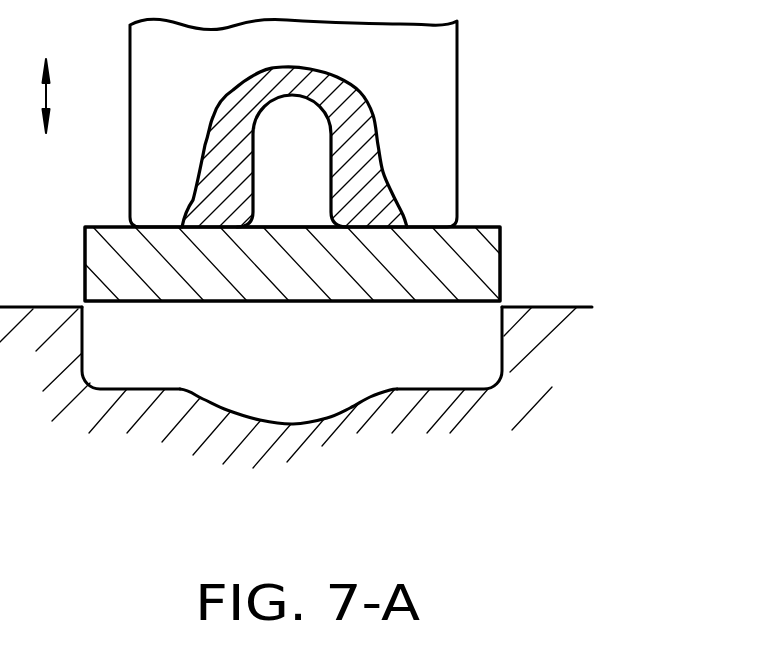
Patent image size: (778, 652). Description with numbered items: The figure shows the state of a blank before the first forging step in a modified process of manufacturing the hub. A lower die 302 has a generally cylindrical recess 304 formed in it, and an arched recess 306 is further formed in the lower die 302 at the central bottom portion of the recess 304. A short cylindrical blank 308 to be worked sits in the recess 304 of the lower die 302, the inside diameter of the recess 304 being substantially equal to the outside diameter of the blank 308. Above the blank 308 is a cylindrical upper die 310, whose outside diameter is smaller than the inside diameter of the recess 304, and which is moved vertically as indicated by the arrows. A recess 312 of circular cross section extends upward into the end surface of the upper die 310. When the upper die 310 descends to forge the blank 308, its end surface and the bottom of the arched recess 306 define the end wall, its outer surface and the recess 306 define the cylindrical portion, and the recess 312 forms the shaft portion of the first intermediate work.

The lower die 302 is at (309, 367).
The recess 304 is at (350, 400).
The arched recess 306 is at (318, 415).
The blank 308 is at (485, 224).
The upper die 310 is at (433, 130).
The recess 312 is at (330, 126).